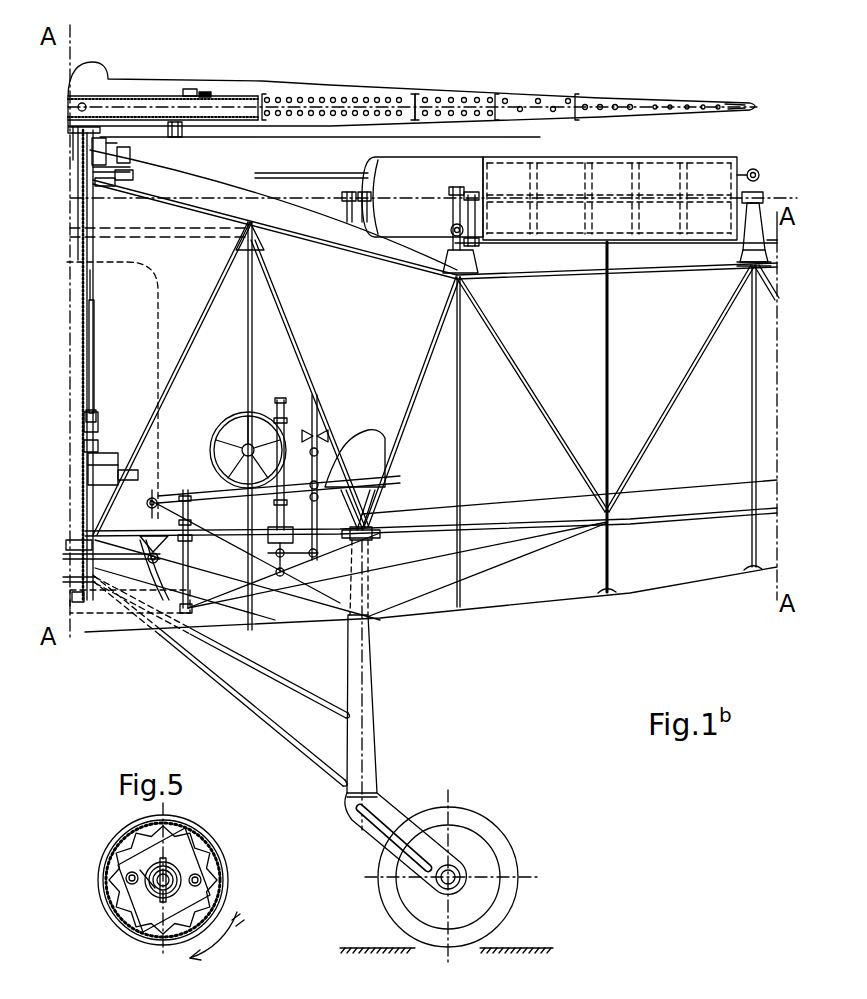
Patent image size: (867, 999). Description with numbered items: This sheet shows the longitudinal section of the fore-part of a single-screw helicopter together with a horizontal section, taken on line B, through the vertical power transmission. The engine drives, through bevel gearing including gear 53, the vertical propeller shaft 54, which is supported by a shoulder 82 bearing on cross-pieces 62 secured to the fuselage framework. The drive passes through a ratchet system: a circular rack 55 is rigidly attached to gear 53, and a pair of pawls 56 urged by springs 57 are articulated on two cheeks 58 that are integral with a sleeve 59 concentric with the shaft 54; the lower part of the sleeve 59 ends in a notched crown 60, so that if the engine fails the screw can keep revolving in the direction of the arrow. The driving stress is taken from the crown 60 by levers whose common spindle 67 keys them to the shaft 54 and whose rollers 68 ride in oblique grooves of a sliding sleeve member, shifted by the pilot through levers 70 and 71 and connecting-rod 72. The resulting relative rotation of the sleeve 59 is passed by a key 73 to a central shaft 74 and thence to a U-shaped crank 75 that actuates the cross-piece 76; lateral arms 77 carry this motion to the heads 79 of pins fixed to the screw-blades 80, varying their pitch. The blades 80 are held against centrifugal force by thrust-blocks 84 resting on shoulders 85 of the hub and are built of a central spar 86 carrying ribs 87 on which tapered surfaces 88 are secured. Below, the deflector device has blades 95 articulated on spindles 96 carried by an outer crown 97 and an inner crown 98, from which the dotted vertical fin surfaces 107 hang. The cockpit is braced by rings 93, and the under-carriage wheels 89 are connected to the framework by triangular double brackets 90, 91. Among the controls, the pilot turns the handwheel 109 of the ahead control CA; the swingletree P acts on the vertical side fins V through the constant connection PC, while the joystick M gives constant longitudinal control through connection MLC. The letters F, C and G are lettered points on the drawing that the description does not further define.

In FIG. 1B, the thrust-blocks 84 is at (193, 89).
In FIG. 1B, the shoulders 85 is at (205, 92).
In FIG. 1B, the screw-blades 80 is at (307, 102).
In FIG. 1B, the central spar 86 is at (380, 92).
In FIG. 1B, the ribs 87 is at (417, 92).
In FIG. 1B, the tapered surfaces 88 is at (553, 92).
In FIG. 1B, the pin heads 79 is at (176, 133).
In FIG. 1B, the lateral arms 77 is at (167, 140).
In FIG. 1B, the U-shaped crank 75 is at (99, 184).
In FIG. 1B, the cross-piece 76 is at (123, 180).
In FIG. 1B, the outer crown 97 is at (311, 177).
In FIG. 1B, the inner crown 98 is at (427, 232).
In FIG. 1B, the spindles 96 is at (568, 200).
In FIG. 1B, the deflector blades 95 is at (703, 170).
In FIG. 1B, the vertical fin surfaces 107 is at (140, 296).
In FIG. 1B, the central shaft 74 is at (95, 284).
In FIG. 5, the central shaft 74 is at (220, 897).
In FIG. 1B, the vertical propeller shaft 54 is at (94, 330).
In FIG. 1B, the shoulder 82 is at (91, 408).
In FIG. 1B, the cross-pieces 62 is at (100, 415).
In FIG. 1B, the sleeve 59 is at (96, 443).
In FIG. 1B, the bevel gear 53 is at (112, 460).
In FIG. 1B, the crown 60 is at (150, 462).
In FIG. 1B, the lever 71 is at (210, 493).
In FIG. 1B, the handwheel 109 is at (257, 413).
In FIG. 1B, the connecting-rod 72 is at (312, 428).
In FIG. 1B, the lever 70 is at (193, 608).
In FIG. 1B, the rollers 68 is at (78, 602).
In FIG. 1B, the common spindle 67 is at (148, 600).
In FIG. 1B, the rings 93 is at (730, 575).
In FIG. 1B, the triangular double bracket 90 is at (372, 665).
In FIG. 1B, the triangular double bracket 91 is at (290, 738).
In FIG. 1B, the wheels 89 is at (490, 832).
In FIG. 5, the circular rack 55 is at (140, 822).
In FIG. 5, the cheeks 58 is at (157, 856).
In FIG. 5, the key 73 is at (168, 858).
In FIG. 5, the pawls 56 is at (200, 873).
In FIG. 5, the springs 57 is at (145, 886).
In FIG. 1B, the frame fitting F is at (114, 193).
In FIG. 1B, the cowl line C is at (241, 146).
In FIG. 1B, the ahead control CA is at (242, 413).
In FIG. 1B, the joystick M is at (281, 404).
In FIG. 1B, the section line B— B is at (279, 487).
In FIG. 1B, the pivot G is at (143, 504).
In FIG. 1B, the swingletree P is at (190, 503).
In FIG. 1B, the vertical side fins control points V is at (118, 612).
In FIG. 1B, the constant swingletree connection PC is at (476, 503).
In FIG. 1B, the constant longitudinal joystick control MLC is at (494, 547).